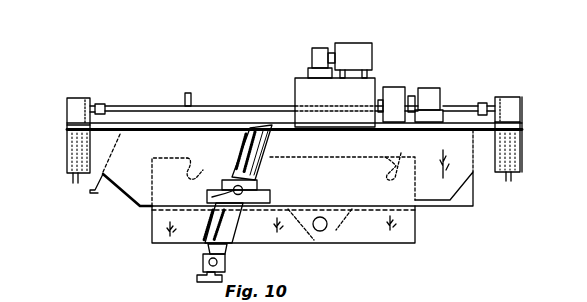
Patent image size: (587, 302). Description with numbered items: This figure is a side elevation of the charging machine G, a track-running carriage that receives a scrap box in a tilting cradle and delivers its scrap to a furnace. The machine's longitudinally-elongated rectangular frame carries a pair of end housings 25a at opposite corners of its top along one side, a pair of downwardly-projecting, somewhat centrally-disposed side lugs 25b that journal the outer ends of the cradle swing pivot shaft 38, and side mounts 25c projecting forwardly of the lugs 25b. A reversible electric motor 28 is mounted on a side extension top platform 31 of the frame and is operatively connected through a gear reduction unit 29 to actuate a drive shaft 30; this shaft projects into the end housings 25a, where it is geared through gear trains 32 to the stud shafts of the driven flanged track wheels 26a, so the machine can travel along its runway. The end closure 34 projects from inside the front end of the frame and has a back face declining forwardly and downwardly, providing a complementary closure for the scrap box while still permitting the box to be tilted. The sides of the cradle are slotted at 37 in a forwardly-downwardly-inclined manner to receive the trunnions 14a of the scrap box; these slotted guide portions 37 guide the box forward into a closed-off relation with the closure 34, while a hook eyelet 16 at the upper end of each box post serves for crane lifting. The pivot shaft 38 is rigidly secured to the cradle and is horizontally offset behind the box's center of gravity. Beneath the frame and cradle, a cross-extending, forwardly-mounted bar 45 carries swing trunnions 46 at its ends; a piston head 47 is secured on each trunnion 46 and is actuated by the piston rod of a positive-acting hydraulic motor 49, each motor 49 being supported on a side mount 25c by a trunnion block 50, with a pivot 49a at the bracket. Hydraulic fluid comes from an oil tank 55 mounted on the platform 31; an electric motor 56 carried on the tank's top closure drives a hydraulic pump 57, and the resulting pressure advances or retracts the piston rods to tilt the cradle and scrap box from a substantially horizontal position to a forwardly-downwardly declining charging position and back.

The trunnions 14a is at (152, 164).
The hook eyelet 16 is at (192, 95).
The end housings 25a is at (77, 97).
The side lugs 25b is at (337, 231).
The side mounts 25c is at (272, 195).
The driven flanged wheels 26a is at (70, 177).
The reversible electric motor 28 is at (436, 88).
The gear reduction unit 29 is at (397, 87).
The drive shaft 30 is at (162, 95).
The side extension top platform 31 is at (70, 117).
The gear trains 32 is at (523, 128).
The end closure 34 is at (91, 188).
The slotted guide portions 37 is at (200, 158).
The pivot shaft 38 is at (319, 231).
The bar 45 is at (198, 278).
The swing trunnions 46 is at (202, 264).
The piston head 47 is at (224, 266).
The hydraulic motor 49 is at (273, 131).
The pivot 49a is at (207, 195).
The trunnion block 50 is at (229, 178).
The oil tank 55 is at (375, 83).
The electric motor 56 is at (361, 43).
The hydraulic pump 57 is at (318, 47).
The charging machine G is at (489, 172).